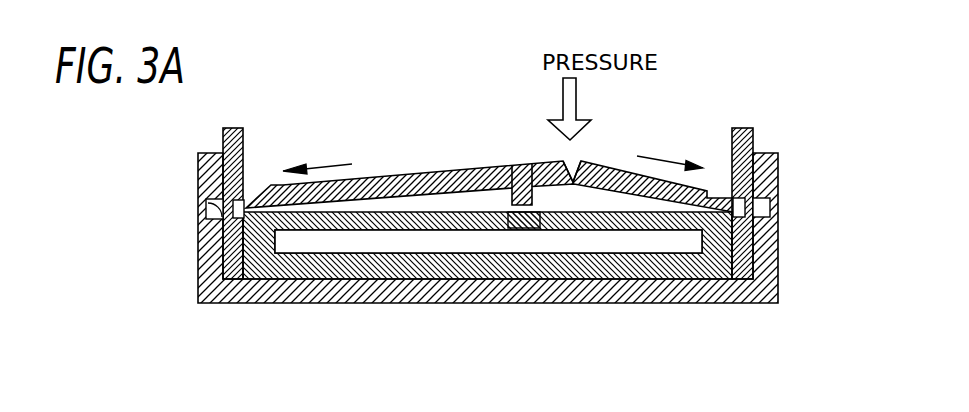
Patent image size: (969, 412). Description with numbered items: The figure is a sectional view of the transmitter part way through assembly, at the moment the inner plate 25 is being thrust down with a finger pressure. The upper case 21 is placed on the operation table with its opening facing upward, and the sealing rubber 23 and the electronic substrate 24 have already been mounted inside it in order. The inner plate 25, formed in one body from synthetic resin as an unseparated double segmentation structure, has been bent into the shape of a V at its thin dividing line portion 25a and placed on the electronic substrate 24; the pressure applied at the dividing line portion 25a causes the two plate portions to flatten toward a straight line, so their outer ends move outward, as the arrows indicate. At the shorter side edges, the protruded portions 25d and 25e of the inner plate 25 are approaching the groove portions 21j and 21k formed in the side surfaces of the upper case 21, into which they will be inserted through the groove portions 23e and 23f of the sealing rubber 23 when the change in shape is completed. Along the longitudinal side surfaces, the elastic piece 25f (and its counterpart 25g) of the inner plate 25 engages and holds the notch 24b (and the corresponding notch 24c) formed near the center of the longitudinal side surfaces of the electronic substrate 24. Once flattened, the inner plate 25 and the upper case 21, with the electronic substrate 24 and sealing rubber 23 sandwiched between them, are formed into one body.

The upper case 21 is at (778, 272).
The groove portion 21j is at (770, 198).
The groove portion 21k is at (207, 204).
The sealing rubber 23 is at (752, 128).
The groove portion 23e is at (728, 281).
The groove portion 23f is at (247, 281).
The electronic substrate 24 is at (430, 231).
The notch 24b is at (488, 305).
The notch 24c is at (513, 231).
The inner plate 25 is at (392, 176).
The dividing line portion 25a is at (570, 158).
The protruded portion 25d is at (713, 195).
The protruded portion 25e is at (253, 200).
The elastic piece 25f is at (486, 142).
The elastic piece 25g is at (522, 162).